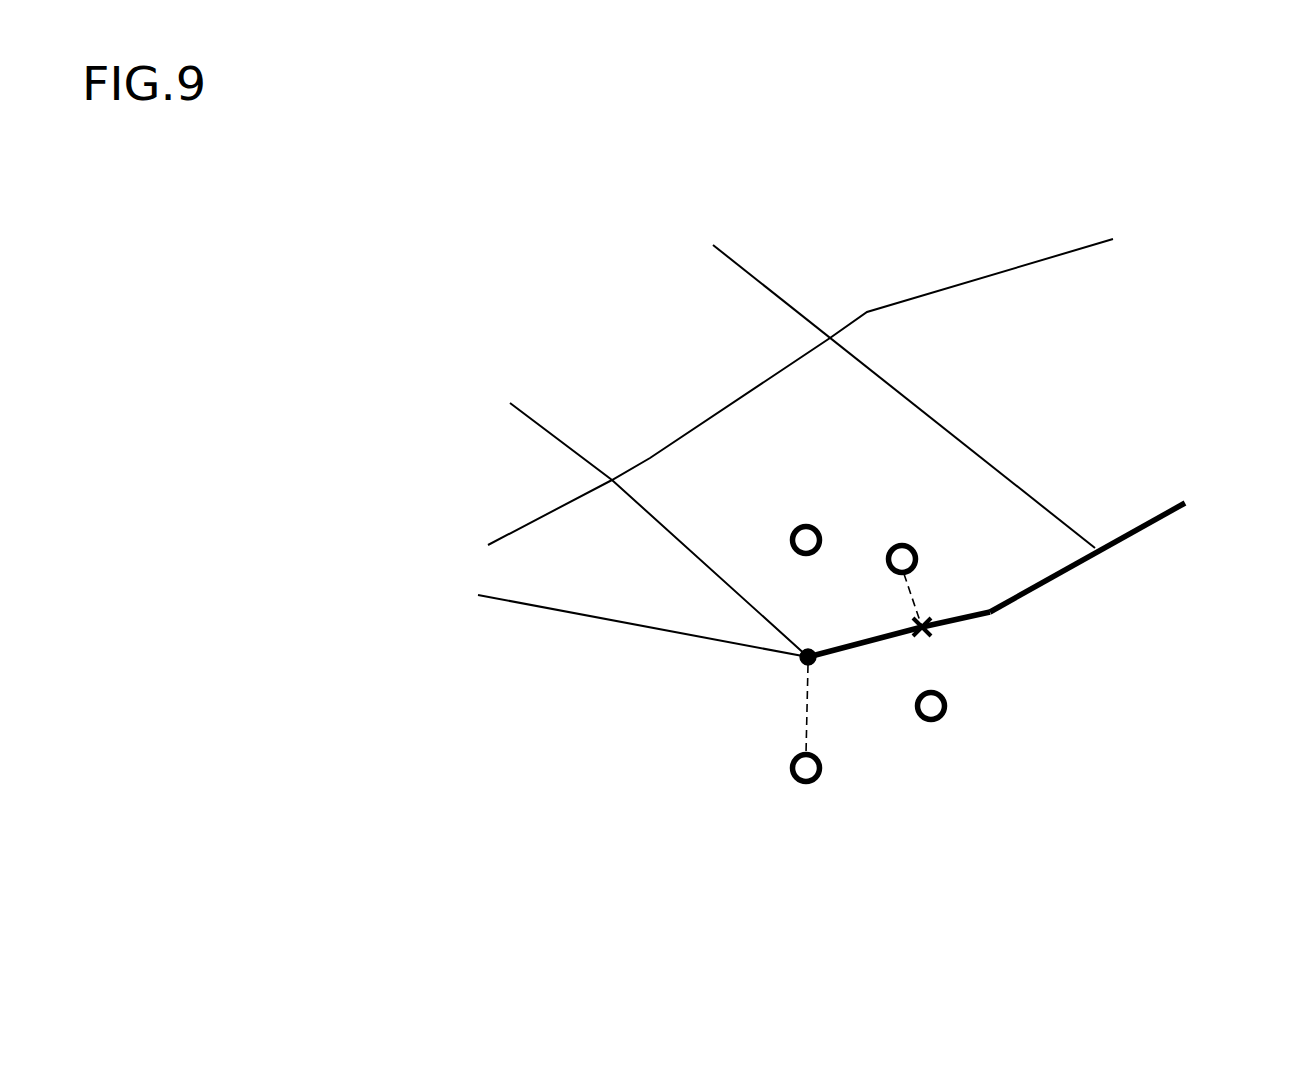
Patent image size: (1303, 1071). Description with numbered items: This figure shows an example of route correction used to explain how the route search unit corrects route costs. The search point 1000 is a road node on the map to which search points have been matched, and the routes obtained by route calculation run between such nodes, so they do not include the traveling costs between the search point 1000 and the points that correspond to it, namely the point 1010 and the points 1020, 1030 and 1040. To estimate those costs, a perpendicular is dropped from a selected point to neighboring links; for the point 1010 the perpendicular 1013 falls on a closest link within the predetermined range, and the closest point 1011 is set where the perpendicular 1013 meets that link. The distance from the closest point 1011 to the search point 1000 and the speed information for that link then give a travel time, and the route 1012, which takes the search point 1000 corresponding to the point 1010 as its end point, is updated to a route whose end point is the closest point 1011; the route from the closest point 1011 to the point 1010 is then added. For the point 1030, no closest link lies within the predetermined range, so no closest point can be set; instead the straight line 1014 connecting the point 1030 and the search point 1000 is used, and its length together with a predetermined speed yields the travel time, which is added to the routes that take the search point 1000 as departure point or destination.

The search point 1000 is at (797, 672).
The point 1010 is at (912, 544).
The closest point 1011 is at (926, 614).
The route 1012 is at (1146, 527).
The perpendicular 1013 is at (914, 606).
The straight line 1014 is at (810, 723).
The point 1020 is at (808, 523).
The point 1030 is at (791, 778).
The point 1040 is at (945, 692).